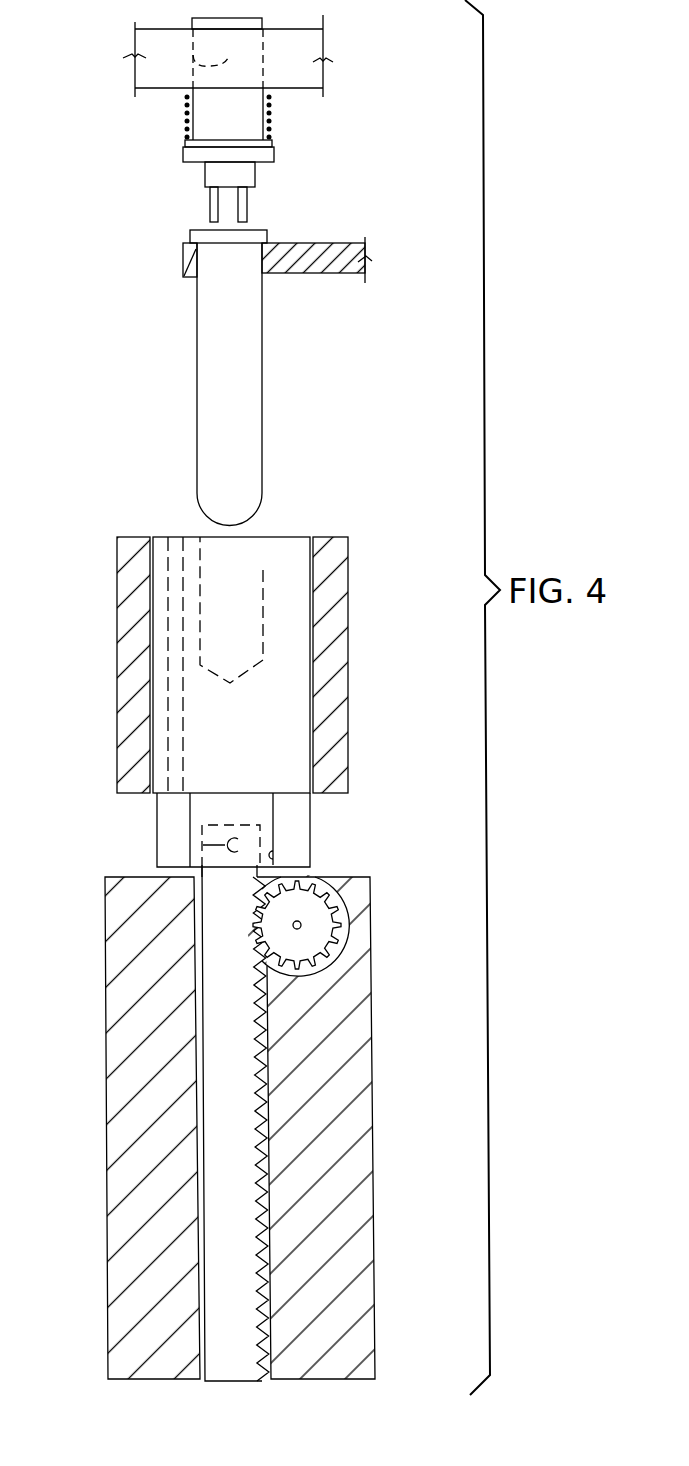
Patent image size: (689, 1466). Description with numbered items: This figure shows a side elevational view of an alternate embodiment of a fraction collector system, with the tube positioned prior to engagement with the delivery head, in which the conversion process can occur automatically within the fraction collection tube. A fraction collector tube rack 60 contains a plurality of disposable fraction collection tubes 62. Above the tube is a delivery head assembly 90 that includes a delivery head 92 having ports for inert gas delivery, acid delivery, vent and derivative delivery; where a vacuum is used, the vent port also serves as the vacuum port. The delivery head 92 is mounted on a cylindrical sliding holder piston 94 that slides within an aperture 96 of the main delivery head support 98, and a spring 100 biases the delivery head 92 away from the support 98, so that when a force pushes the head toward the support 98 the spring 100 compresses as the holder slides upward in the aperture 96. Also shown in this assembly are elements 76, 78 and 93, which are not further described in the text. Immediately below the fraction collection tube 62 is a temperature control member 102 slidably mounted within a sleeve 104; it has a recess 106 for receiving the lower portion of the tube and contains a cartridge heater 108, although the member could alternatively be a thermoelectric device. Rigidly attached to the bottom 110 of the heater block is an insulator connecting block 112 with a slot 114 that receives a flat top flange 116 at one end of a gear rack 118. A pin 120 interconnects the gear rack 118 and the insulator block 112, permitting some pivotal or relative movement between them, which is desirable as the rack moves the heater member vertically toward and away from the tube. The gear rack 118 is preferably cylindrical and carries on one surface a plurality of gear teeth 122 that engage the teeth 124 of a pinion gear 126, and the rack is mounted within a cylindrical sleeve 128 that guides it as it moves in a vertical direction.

The fraction collector tube rack 60 is at (333, 240).
The fraction collection tube 62 is at (197, 325).
The coupling block 76 is at (196, 165).
The mounting plate 78 is at (205, 230).
The delivery head assembly 90 is at (150, 24).
The delivery head 92 is at (274, 155).
The connector pins 93 is at (218, 202).
The cylindrical sliding holder piston 94 is at (250, 18).
The aperture 96 is at (228, 58).
The main delivery head support 98 is at (302, 65).
The spring 100 is at (186, 125).
The temperature control member 102 is at (197, 528).
The sleeve 104 is at (348, 656).
The recess 106 is at (263, 570).
The cartridge heater 108 is at (170, 608).
The bottom 110 is at (287, 794).
The insulator connecting block 112 is at (280, 823).
The slot 114 is at (312, 862).
The flat top flange 116 is at (200, 857).
The gear rack 118 is at (230, 945).
The pin 120 is at (203, 845).
The gear teeth 122 is at (263, 1128).
The teeth 124 is at (348, 928).
The pinion gear 126 is at (307, 908).
The cylindrical sleeve 128 is at (300, 1045).